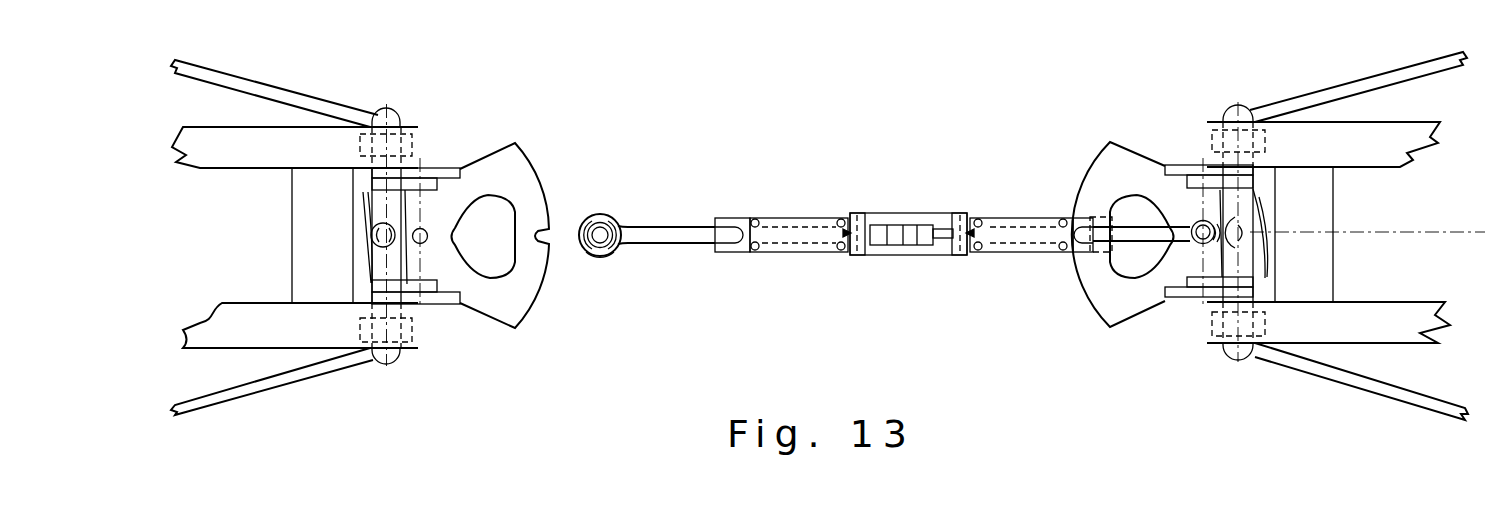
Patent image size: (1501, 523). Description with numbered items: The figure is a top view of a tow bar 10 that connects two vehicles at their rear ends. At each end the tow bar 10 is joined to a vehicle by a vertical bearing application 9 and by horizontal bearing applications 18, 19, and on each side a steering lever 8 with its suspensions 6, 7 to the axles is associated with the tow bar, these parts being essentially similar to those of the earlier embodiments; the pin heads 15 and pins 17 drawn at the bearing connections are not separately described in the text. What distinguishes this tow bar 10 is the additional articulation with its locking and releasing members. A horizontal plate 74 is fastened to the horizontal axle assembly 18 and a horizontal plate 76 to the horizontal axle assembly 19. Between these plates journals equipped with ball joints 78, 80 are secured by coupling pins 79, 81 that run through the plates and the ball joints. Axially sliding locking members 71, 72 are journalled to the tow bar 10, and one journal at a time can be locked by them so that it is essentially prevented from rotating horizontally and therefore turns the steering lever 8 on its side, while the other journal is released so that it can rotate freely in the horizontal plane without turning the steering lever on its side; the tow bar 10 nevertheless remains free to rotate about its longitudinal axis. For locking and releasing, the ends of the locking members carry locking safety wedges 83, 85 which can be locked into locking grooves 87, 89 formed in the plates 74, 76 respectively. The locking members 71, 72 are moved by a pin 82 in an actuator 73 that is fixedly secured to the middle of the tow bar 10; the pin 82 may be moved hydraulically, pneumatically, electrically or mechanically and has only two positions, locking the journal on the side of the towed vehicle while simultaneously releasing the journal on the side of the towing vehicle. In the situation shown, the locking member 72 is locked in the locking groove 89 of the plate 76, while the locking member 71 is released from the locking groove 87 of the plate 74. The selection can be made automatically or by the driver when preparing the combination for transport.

The suspension 6 is at (212, 78).
The suspension 7 is at (250, 390).
The steering lever 8 is at (410, 348).
The vertical bearing application 9 is at (377, 243).
The tow bar 10 is at (685, 225).
The pin head 15 is at (378, 108).
The pin 17 is at (388, 358).
The horizontal bearing application 18 is at (418, 165).
The horizontal bearing application 19 is at (430, 305).
The locking member 71 is at (790, 225).
The locking member 72 is at (1013, 217).
The actuator 73 is at (928, 215).
The horizontal plate 74 is at (525, 170).
The horizontal plate 76 is at (1113, 163).
The ball joint 78 is at (602, 254).
The coupling pin 79 is at (428, 235).
The ball joint 80 is at (1200, 222).
The coupling pin 81 is at (1188, 303).
The pin 82 is at (950, 217).
The locking safety wedge 83 is at (728, 252).
The locking safety wedge 85 is at (1080, 230).
The locking groove 87 is at (576, 226).
The locking groove 89 is at (1085, 227).